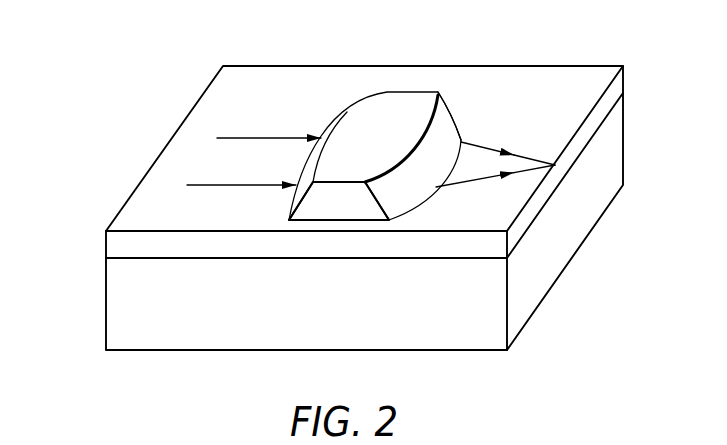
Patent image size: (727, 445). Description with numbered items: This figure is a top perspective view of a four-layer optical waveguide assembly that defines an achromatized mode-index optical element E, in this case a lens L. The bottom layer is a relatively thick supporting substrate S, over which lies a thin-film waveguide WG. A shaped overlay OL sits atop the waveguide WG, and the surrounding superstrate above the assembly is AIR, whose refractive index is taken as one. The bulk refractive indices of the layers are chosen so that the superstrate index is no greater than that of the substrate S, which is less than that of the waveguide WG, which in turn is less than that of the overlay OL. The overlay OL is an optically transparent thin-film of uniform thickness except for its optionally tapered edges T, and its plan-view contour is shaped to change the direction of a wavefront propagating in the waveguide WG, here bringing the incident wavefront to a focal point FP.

The supporting substrate S is at (164, 311).
The thin-film waveguide WG is at (122, 239).
The air superstrate AIR is at (144, 102).
The lens L is at (452, 122).
The shaped overlay OL is at (351, 213).
The achromatized mode-index optical element E is at (468, 74).
The tapered edges T is at (291, 197).
The focal point FP is at (555, 165).